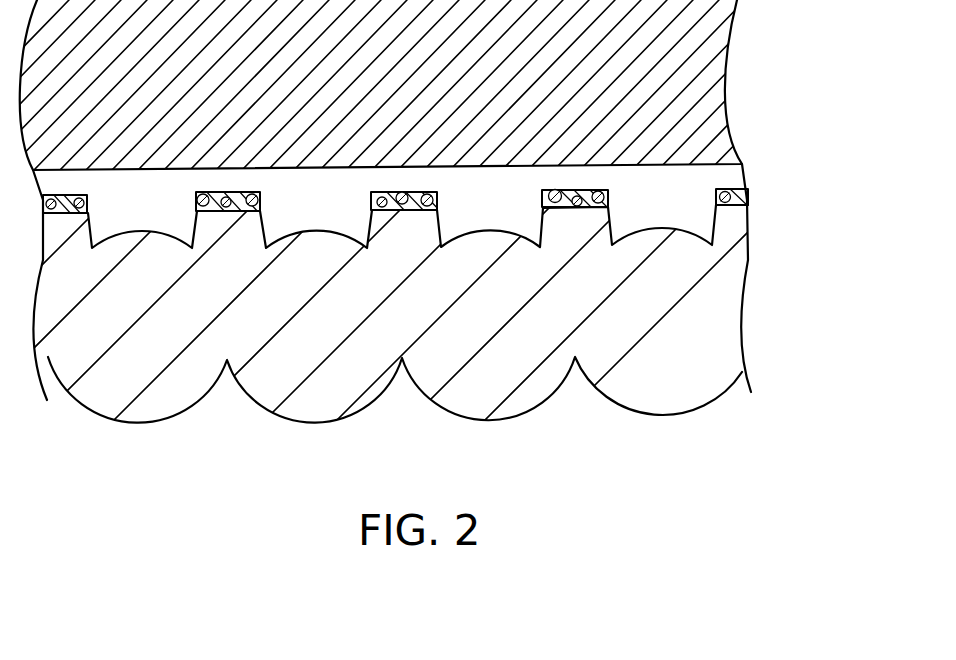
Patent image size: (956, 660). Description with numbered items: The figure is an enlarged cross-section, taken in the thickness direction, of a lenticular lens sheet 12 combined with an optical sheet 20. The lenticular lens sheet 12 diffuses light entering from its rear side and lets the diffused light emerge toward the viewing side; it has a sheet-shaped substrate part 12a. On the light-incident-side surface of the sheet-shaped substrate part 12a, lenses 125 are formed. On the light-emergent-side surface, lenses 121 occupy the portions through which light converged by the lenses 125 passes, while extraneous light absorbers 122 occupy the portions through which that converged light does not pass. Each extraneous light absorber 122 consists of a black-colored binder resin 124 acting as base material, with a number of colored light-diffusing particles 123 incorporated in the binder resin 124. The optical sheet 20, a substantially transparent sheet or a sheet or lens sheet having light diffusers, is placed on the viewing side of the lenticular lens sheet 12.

The optical sheet 20 is at (718, 42).
The lenticular lens sheet 12 is at (411, 330).
The sheet-shaped substrate part 12a is at (713, 305).
The lenses 121 is at (488, 231).
The extraneous light absorbers 122 is at (396, 197).
The light-diffusing particles 123 is at (402, 192).
The binder resin 124 is at (376, 199).
The lenses 125 is at (515, 420).